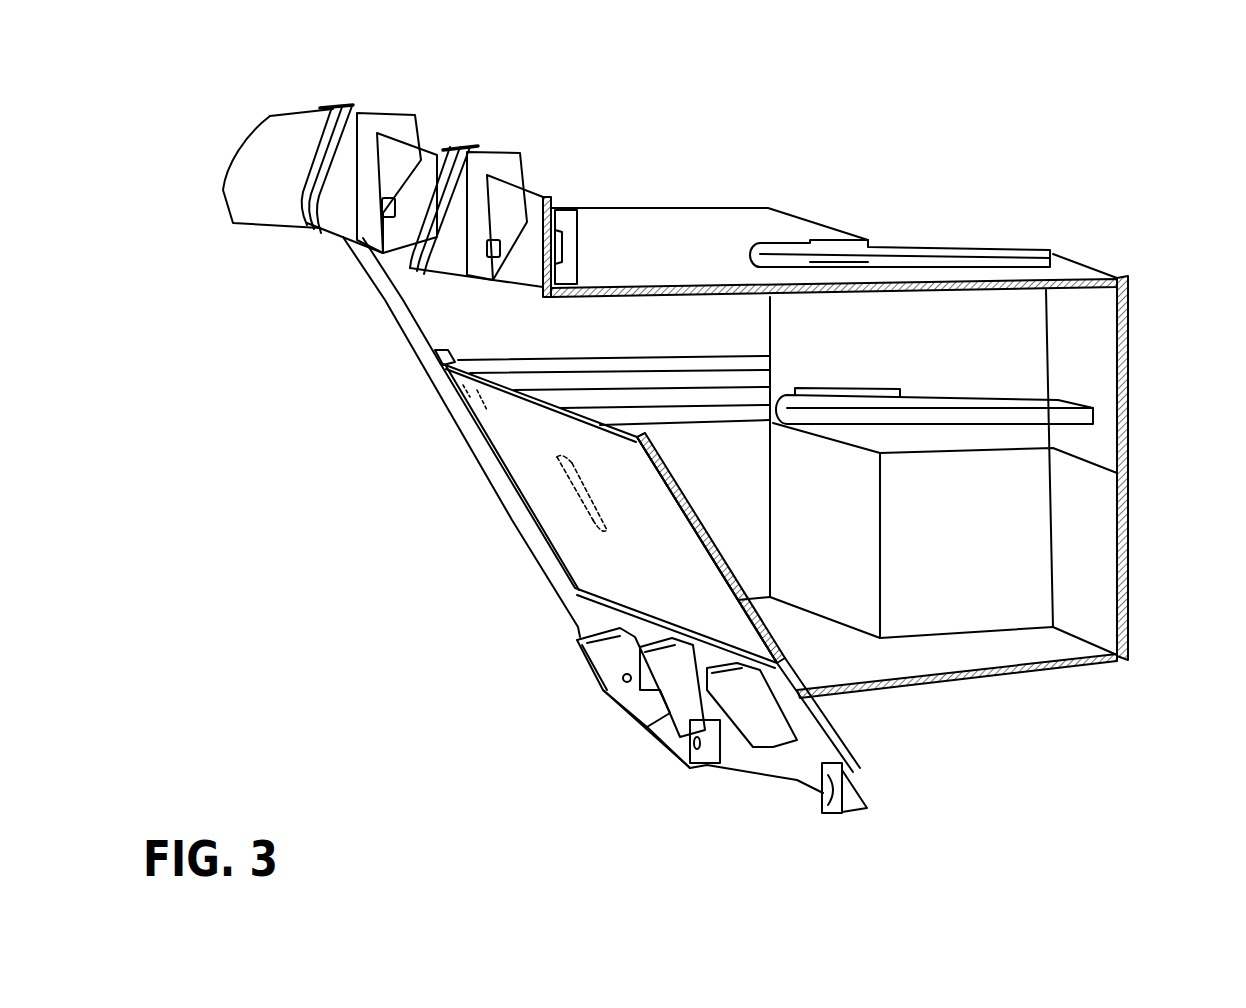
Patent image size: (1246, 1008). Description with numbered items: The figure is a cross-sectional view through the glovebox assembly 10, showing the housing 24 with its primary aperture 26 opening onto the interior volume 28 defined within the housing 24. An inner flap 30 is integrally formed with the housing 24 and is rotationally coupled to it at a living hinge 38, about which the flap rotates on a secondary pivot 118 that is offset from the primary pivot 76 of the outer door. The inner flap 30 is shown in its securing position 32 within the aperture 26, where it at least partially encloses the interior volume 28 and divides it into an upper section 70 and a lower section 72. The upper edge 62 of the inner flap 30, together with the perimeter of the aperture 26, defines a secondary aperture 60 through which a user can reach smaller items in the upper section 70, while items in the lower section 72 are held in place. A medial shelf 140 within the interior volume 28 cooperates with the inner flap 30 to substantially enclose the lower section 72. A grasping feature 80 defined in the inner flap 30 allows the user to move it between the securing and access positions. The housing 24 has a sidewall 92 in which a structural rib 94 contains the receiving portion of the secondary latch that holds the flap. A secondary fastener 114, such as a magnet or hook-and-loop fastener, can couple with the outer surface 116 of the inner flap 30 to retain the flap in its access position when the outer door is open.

The glovebox assembly 10 is at (885, 160).
The housing 24 is at (1051, 257).
The aperture 26 is at (422, 335).
The interior volume 28 is at (718, 313).
The inner flap 30 is at (577, 535).
The securing position 32 is at (472, 445).
The living hinge 38 is at (613, 612).
The secondary aperture 60 is at (452, 352).
The upper edge 62 is at (640, 437).
The upper section 70 is at (433, 303).
The lower section 72 is at (988, 593).
The primary pivot 76 is at (628, 690).
The grasping feature 80 is at (573, 487).
The sidewall 92 is at (663, 340).
The structural rib 94 is at (707, 380).
The secondary fastener 114 is at (463, 395).
The outer surface 116 is at (620, 567).
The secondary pivot 118 is at (787, 657).
The medial shelf 140 is at (970, 405).